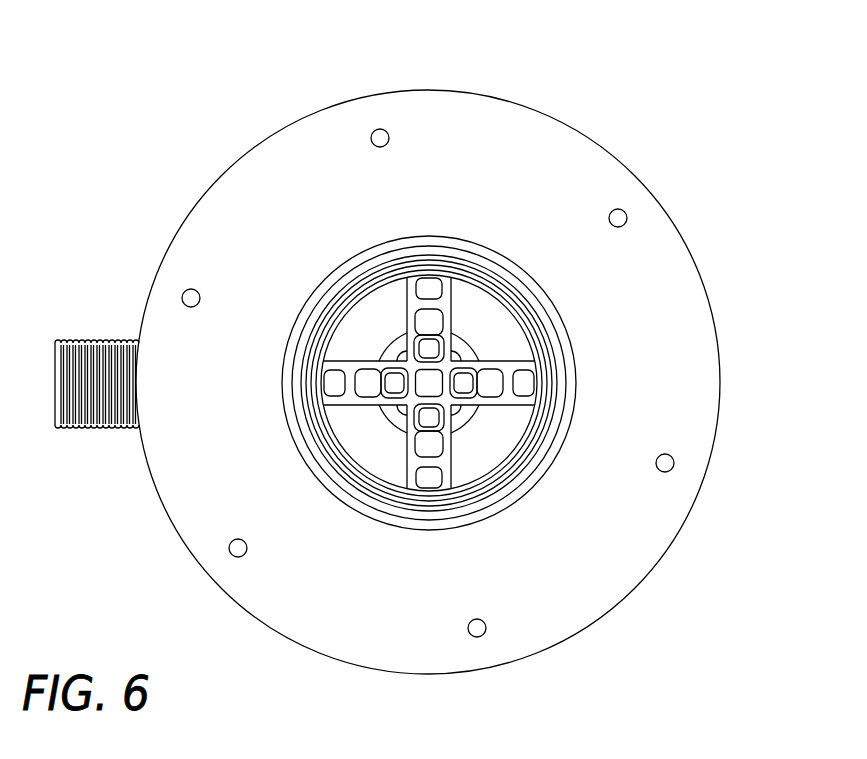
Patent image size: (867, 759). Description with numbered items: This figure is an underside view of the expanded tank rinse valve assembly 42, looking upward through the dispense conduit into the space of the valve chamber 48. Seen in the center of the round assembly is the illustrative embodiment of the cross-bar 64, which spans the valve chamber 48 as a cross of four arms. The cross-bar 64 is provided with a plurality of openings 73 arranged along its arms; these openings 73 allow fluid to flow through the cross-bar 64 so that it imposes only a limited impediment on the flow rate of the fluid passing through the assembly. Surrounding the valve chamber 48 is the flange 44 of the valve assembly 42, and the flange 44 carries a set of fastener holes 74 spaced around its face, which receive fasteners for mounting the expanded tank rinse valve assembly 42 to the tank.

The expanded tank rinse valve assembly 42 is at (700, 95).
The flange 44 is at (683, 350).
The valve chamber 48 is at (503, 452).
The cross-bar 64 is at (367, 356).
The openings 73 is at (440, 347).
The fastener holes 74 is at (371, 138).